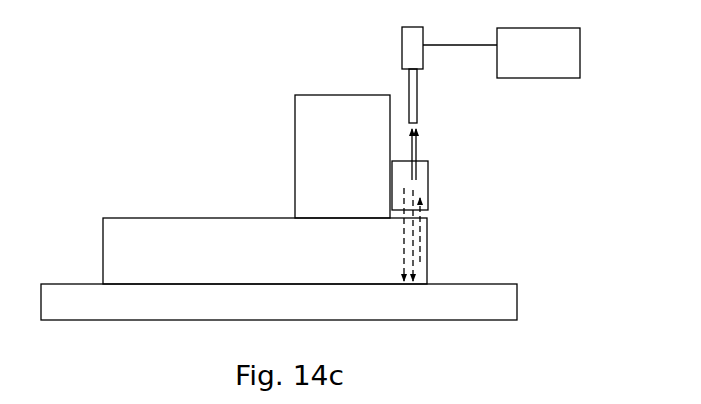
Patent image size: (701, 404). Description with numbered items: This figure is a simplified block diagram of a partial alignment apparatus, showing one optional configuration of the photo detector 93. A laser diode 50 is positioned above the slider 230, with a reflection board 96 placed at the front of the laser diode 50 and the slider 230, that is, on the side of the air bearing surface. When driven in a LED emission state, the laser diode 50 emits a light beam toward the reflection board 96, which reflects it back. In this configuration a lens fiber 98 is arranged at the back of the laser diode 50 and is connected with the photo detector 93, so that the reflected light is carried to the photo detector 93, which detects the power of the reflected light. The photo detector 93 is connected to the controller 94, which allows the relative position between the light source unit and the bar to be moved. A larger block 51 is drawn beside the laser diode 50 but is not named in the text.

The photo detector 93 is at (423, 26).
The controller 94 is at (583, 47).
The lens fiber 98 is at (417, 93).
The substrate block 51 is at (296, 154).
The laser diode 50 is at (430, 187).
The slider 230 is at (428, 248).
The reflection board 96 is at (518, 299).